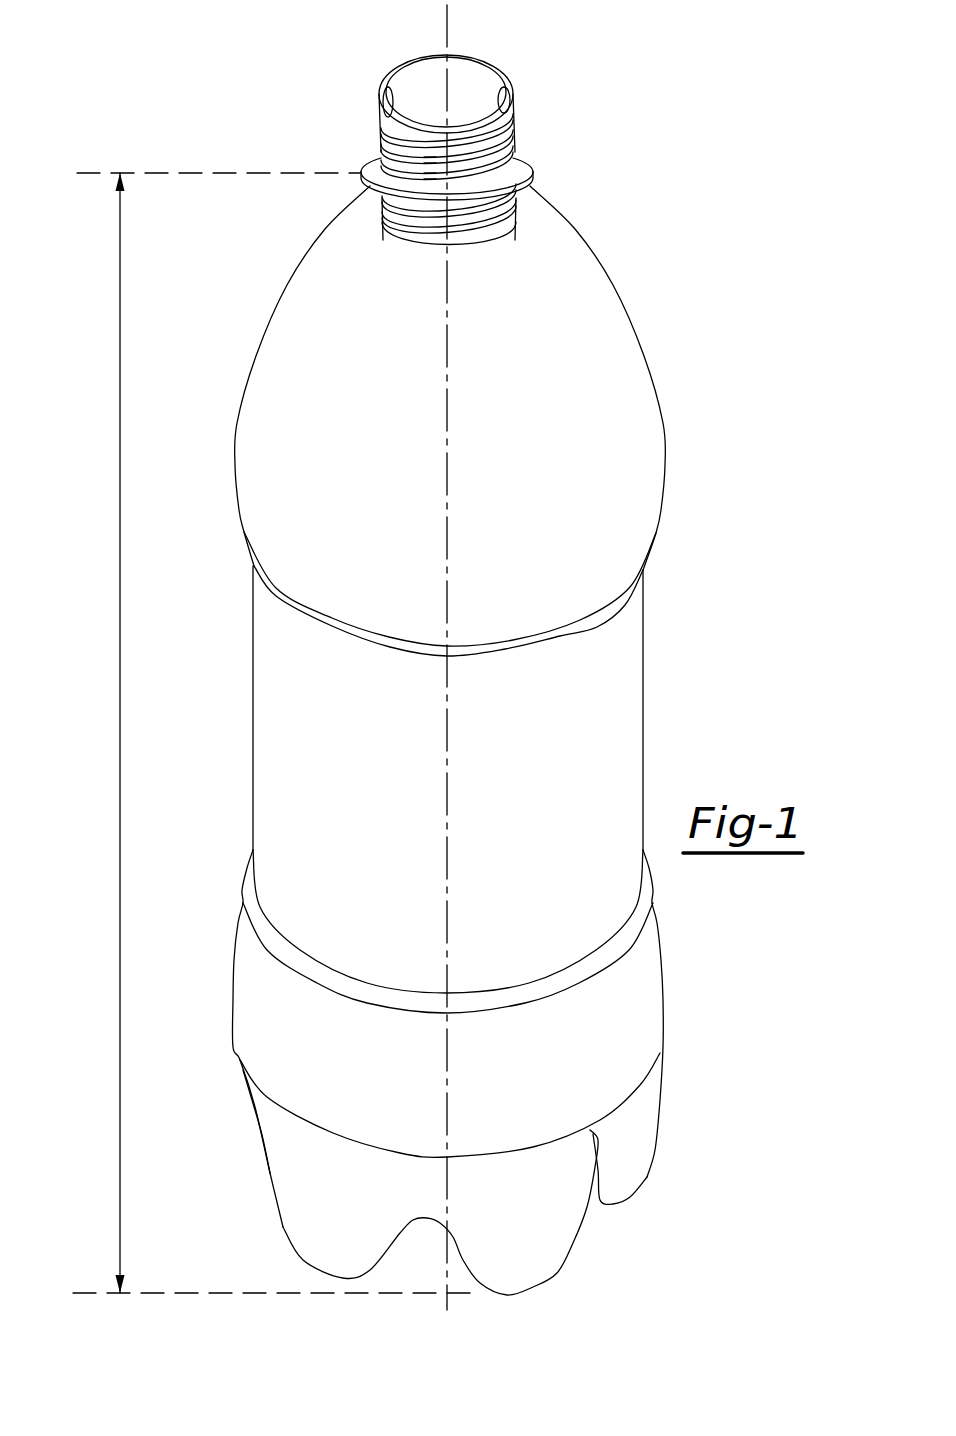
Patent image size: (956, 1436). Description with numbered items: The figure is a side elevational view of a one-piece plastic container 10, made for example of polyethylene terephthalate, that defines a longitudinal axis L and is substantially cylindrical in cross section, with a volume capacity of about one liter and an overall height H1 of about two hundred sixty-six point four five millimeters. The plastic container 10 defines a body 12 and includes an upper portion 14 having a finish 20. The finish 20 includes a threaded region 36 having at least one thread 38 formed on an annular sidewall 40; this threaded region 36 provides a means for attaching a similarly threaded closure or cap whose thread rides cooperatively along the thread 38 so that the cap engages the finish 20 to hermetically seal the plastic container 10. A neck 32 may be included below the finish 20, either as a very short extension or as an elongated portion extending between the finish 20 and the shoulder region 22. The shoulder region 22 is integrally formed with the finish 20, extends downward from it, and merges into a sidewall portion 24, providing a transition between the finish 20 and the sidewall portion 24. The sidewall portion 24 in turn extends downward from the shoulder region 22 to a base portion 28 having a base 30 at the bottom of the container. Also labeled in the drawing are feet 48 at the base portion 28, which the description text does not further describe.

The plastic container 10 is at (738, 161).
The body 12 is at (721, 558).
The upper portion 14 is at (606, 132).
The finish 20 is at (538, 144).
The shoulder region 22 is at (630, 293).
The sidewall portion 24 is at (648, 666).
The base portion 28 is at (700, 1091).
The base 30 is at (520, 1293).
The neck 32 is at (428, 228).
The threaded region 36 is at (386, 117).
The thread 38 is at (391, 116).
The annular sidewall 40 is at (497, 110).
The feet 48 is at (292, 1236).
The longitudinal axis L is at (450, 730).
The overall height H1 is at (274, 733).